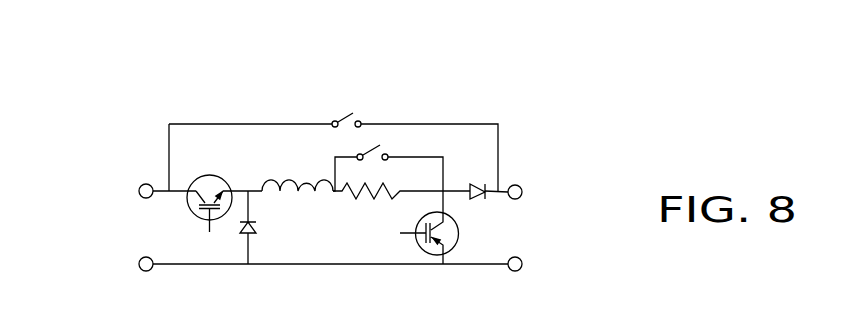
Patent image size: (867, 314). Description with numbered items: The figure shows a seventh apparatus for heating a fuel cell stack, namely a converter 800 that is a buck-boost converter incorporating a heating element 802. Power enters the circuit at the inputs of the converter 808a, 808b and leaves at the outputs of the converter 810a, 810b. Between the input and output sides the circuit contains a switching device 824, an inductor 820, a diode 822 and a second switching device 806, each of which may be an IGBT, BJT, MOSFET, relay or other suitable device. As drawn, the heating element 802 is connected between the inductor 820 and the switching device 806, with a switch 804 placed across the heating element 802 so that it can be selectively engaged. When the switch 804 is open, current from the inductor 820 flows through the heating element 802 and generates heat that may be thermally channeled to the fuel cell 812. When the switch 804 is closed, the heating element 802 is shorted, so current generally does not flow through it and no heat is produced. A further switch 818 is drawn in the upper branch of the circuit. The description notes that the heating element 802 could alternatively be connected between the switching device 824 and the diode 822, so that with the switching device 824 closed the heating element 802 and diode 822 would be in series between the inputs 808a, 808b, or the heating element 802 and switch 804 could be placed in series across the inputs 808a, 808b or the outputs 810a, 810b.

The converter 800 is at (452, 53).
The heating element 802 is at (372, 191).
The switch 804 is at (371, 147).
The switching device 806 is at (459, 233).
The input of the converter 808a is at (139, 191).
The input of the converter 808b is at (139, 264).
The output of the converter 810a is at (522, 192).
The output of the converter 810b is at (522, 264).
The fuel cell 812 is at (475, 184).
The switch 818 is at (342, 118).
The inductor 820 is at (270, 180).
The diode 822 is at (242, 237).
The switching device 824 is at (210, 175).